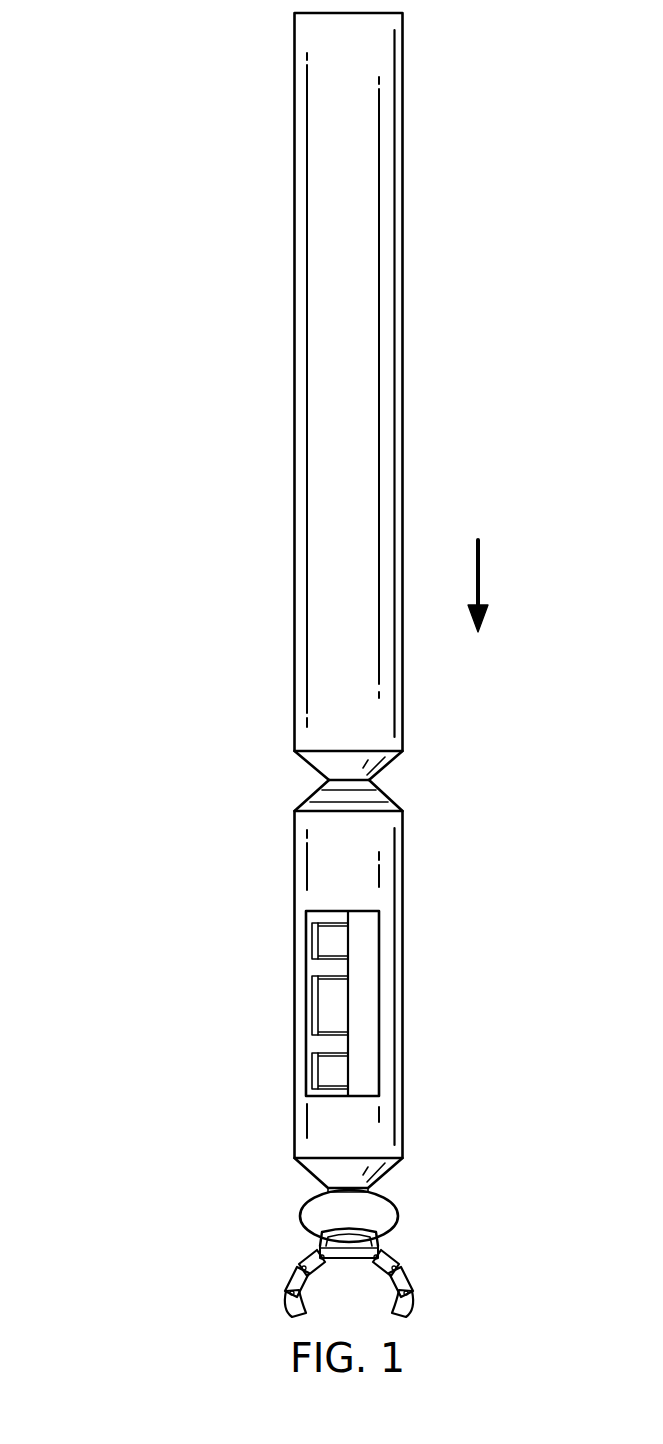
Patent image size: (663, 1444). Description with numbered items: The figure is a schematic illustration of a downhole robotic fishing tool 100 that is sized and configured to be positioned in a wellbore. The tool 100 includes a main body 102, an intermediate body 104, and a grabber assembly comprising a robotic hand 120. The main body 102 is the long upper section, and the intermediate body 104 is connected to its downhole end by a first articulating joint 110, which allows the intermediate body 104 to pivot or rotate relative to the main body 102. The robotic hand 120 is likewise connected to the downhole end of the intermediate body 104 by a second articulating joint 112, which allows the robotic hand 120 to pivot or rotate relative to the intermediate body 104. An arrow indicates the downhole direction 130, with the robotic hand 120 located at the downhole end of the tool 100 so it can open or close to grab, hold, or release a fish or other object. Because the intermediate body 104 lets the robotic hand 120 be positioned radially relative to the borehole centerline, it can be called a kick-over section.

The downhole robotic fishing tool 100 is at (90, 186).
The main body 102 is at (439, 342).
The intermediate body 104 is at (430, 992).
The first articulating joint 110 is at (290, 780).
The second articulating joint 112 is at (276, 1177).
The robotic hand 120 is at (433, 1262).
The downhole direction 130 is at (482, 573).